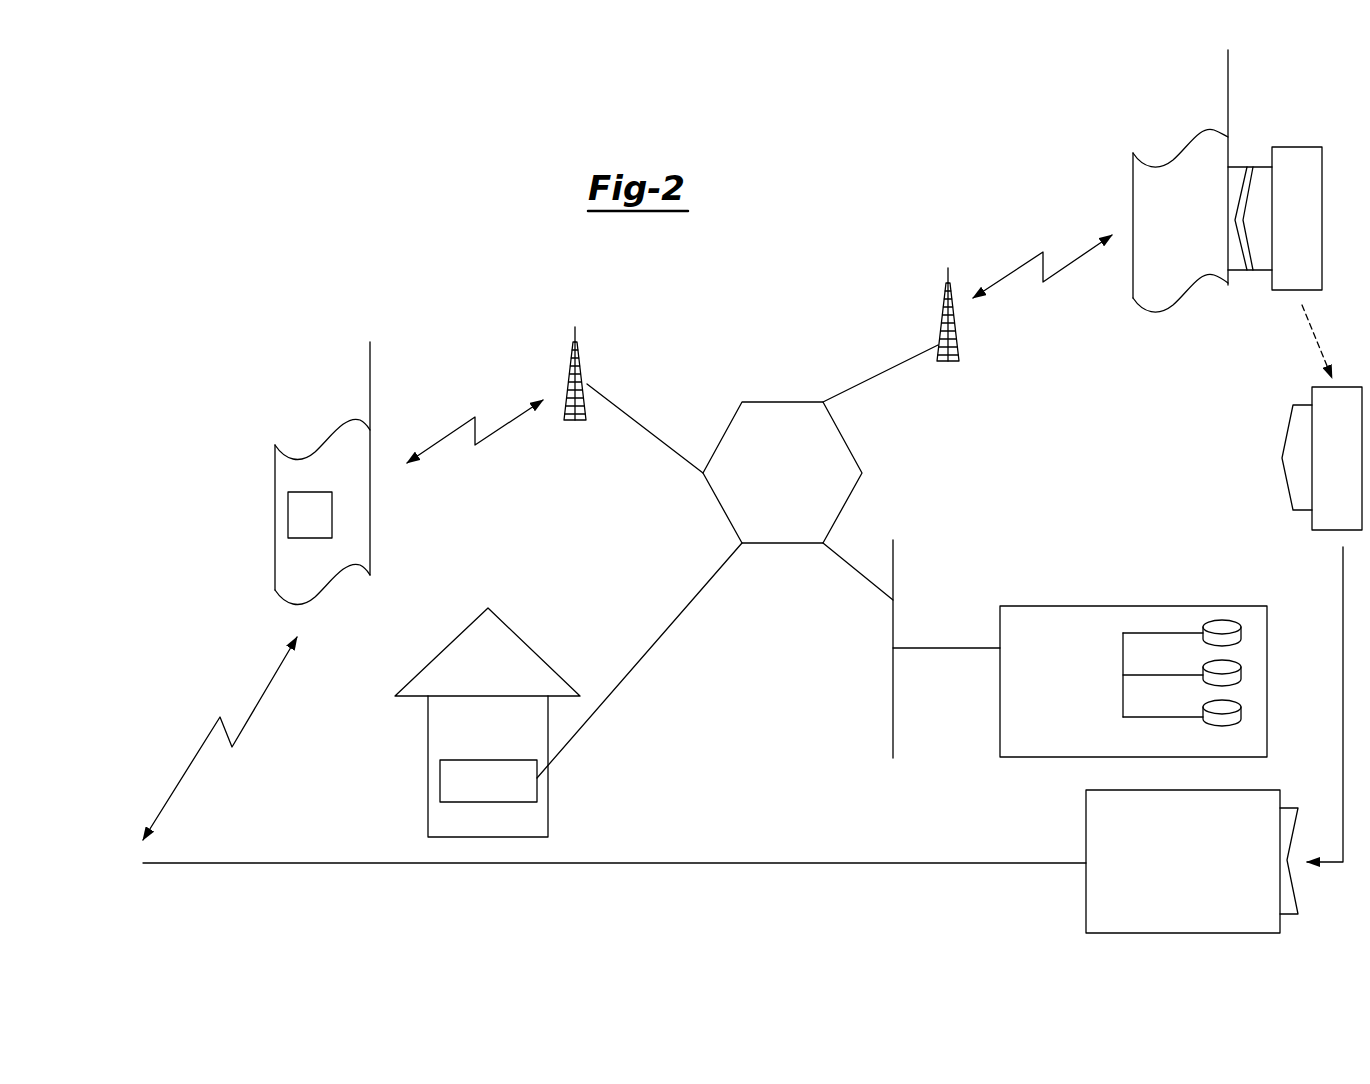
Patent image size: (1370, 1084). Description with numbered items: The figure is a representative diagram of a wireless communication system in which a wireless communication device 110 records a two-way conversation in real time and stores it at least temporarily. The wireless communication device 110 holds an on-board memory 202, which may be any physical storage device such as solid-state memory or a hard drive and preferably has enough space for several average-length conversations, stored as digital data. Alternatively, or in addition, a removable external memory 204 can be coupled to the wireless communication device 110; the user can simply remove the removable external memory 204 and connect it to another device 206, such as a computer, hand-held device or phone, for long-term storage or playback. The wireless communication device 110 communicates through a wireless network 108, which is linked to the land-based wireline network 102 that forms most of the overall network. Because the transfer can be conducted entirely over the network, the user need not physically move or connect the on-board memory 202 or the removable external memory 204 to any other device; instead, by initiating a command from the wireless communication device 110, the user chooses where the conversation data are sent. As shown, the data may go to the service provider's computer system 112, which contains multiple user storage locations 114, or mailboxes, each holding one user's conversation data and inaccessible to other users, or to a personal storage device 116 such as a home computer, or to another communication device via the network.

The wireline network 102 is at (788, 470).
The wireless network 108 is at (566, 378).
The wireless communication device 110 is at (320, 437).
The computer system 112 is at (1115, 606).
The user storage location 114 is at (1223, 630).
The personal storage device 116 is at (494, 796).
The on-board memory 202 is at (316, 529).
The removable external memory 204 is at (1304, 216).
The another device 206 is at (1196, 869).